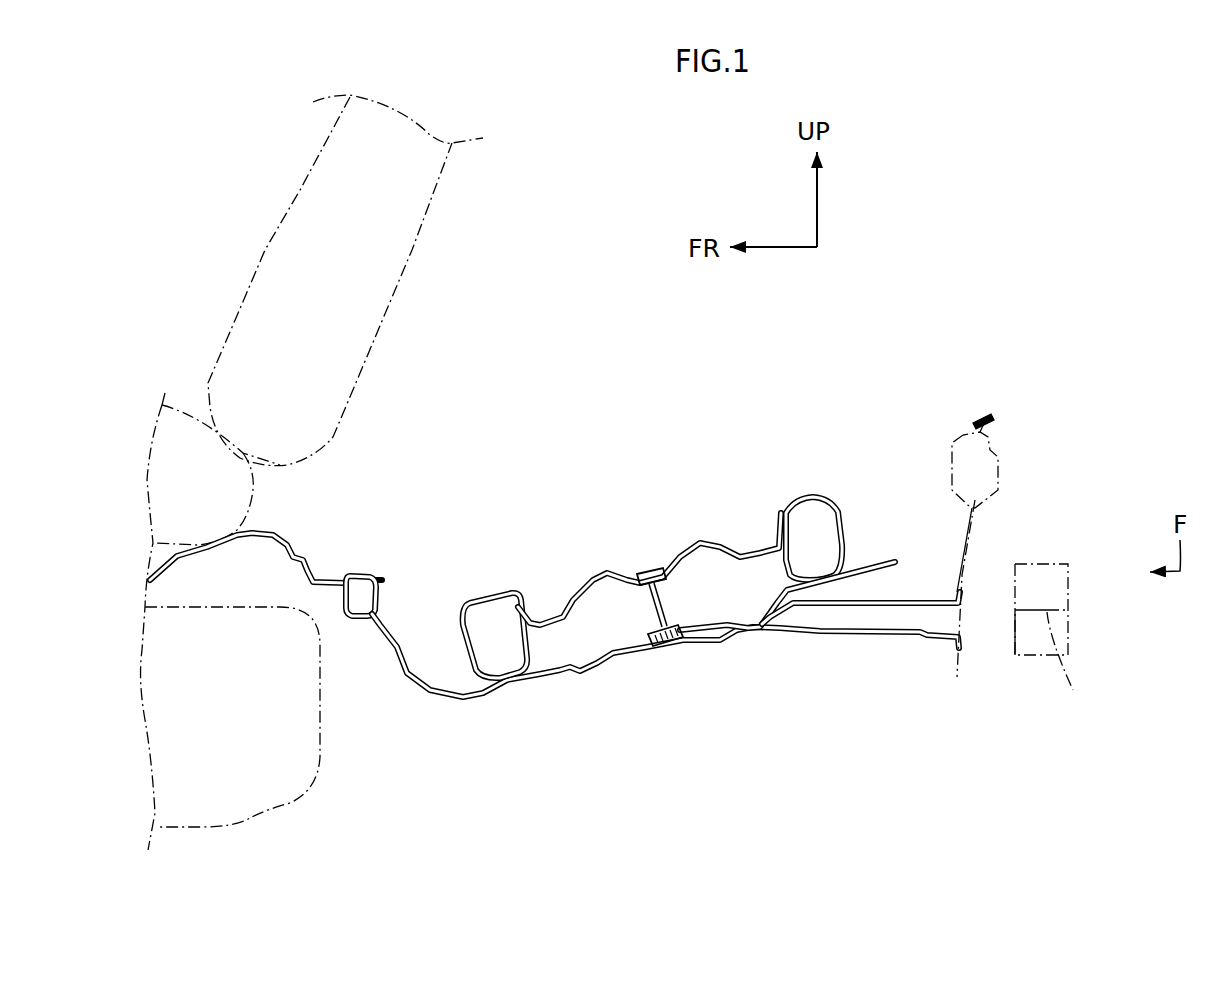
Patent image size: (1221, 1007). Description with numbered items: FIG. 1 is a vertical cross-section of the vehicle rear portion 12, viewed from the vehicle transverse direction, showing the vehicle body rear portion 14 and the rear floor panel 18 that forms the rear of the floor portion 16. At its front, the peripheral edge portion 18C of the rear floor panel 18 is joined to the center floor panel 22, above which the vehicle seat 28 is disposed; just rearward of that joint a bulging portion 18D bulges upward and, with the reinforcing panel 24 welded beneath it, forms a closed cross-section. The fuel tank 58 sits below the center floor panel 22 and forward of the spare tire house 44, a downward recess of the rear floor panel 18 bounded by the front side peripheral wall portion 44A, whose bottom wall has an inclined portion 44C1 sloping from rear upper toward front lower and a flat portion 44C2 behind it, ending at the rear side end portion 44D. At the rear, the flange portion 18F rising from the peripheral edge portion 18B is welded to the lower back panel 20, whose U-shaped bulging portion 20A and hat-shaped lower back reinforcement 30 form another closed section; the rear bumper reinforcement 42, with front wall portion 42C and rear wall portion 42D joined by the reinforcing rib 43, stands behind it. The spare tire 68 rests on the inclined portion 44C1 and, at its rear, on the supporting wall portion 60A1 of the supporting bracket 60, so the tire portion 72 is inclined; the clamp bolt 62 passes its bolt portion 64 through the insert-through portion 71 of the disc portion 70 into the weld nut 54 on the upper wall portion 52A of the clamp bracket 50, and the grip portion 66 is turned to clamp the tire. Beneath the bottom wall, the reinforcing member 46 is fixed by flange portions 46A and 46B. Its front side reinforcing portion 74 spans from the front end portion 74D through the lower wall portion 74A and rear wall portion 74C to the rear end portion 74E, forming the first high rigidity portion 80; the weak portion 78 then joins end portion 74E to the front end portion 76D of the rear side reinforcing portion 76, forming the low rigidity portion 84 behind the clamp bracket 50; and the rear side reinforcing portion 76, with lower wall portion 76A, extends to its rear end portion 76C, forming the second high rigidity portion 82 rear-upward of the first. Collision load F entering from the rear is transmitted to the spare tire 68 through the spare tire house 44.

The vehicle rear portion 12 is at (1050, 180).
The vehicle body rear portion 14 is at (892, 408).
The floor portion 16 is at (380, 458).
The rear floor panel 18 is at (386, 577).
The peripheral edge portion 18B is at (945, 598).
The peripheral edge portion 18C is at (330, 587).
The bulging portion 18D is at (378, 600).
The flange portion 18F is at (975, 563).
The lower back panel 20 is at (1001, 454).
The bulging portion 20A is at (998, 489).
The center floor panel 22 is at (270, 535).
The reinforcing panel 24 is at (350, 620).
The vehicle seat 28 is at (413, 218).
The lower back reinforcement 30 is at (960, 433).
The rear bumper reinforcement 42 is at (1082, 555).
The front wall portion 42C is at (1016, 632).
The rear wall portion 42D is at (1070, 628).
The reinforcing rib 43 is at (1068, 665).
The spare tire house 44 is at (530, 553).
The front side peripheral wall portion 44A is at (407, 667).
The inclined portion 44C1 is at (550, 665).
The flat portion 44C2 is at (880, 640).
The vehicle rear side end portion 44D is at (966, 605).
The reinforcing member 46 is at (802, 726).
The flange portion 46A is at (555, 617).
The flange portion 46B is at (960, 642).
The clamp bracket 50 is at (687, 615).
The upper wall portion 52A is at (587, 660).
The weld nut 54 is at (692, 633).
The fuel tank 58 is at (293, 752).
The supporting bracket 60 is at (880, 555).
The supporting wall portion 60A1 is at (860, 552).
The clamp bolt 62 is at (650, 564).
The bolt portion 64 is at (652, 610).
The grip portion 66 is at (640, 567).
The spare tire 68 is at (692, 508).
The disc portion 70 is at (782, 542).
The insert-through portion 71 is at (673, 567).
The tire portion 72 is at (803, 497).
The front side reinforcing portion 74 is at (617, 691).
The lower wall portion 74A is at (685, 670).
The rear wall portion 74C is at (740, 647).
The end portion 74D is at (620, 668).
The end portion 74E is at (743, 652).
The rear side reinforcing portion 76 is at (893, 605).
The lower wall portion 76A is at (817, 634).
The end portion 76C is at (947, 641).
The end portion 76D is at (763, 625).
The weak portion 78 is at (735, 587).
The first high rigidity portion 80 is at (717, 668).
The second high rigidity portion 82 is at (920, 592).
The low rigidity portion 84 is at (764, 637).